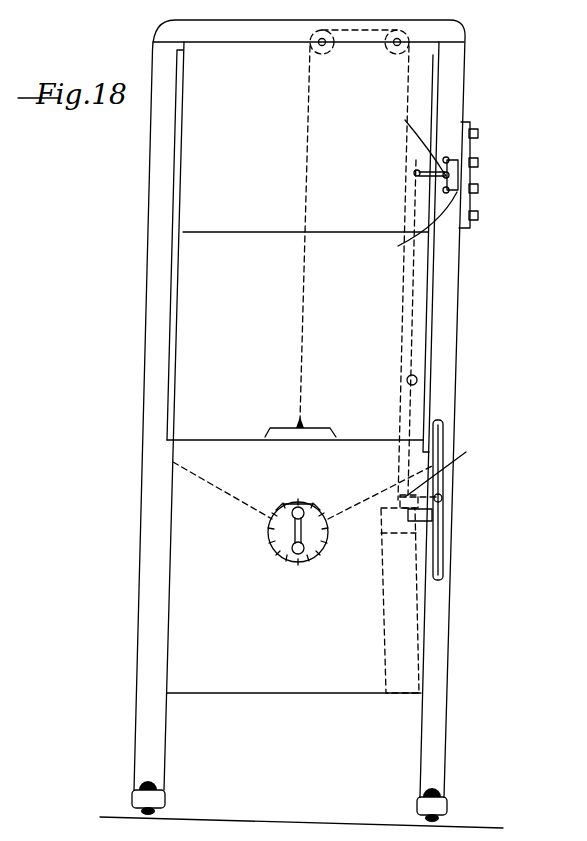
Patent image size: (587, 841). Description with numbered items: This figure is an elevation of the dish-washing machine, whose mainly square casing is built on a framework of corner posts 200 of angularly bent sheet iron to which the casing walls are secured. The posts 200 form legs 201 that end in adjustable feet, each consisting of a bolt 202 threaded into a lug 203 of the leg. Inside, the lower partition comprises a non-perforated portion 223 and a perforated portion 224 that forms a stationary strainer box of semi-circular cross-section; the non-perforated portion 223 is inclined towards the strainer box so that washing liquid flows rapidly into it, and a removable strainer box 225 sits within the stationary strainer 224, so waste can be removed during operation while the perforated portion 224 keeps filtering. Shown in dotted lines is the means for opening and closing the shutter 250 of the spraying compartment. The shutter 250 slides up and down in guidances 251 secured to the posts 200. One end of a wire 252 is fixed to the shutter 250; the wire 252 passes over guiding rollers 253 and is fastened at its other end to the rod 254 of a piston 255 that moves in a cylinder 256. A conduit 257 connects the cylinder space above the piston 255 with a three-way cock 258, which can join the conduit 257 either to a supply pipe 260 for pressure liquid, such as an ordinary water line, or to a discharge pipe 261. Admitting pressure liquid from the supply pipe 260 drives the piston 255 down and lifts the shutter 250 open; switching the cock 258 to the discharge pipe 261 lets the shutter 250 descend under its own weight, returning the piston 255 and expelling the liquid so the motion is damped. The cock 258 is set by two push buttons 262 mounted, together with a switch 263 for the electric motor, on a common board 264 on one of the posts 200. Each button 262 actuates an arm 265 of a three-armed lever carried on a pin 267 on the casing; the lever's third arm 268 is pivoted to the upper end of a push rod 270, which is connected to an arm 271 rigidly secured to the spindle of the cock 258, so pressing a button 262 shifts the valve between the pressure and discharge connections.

The corner posts 200 is at (450, 315).
The legs 201 is at (441, 740).
The bolts 202 is at (438, 791).
The lugs 203 is at (446, 808).
The non-perforated portion 223 is at (214, 488).
The perforated portion 224 is at (285, 556).
The removable strainer box 225 is at (306, 556).
The shutter 250 is at (180, 280).
The guidances 251 is at (178, 148).
The wire 252 is at (302, 318).
The guiding rollers 253 is at (390, 51).
The rod 254 is at (402, 408).
The piston 255 is at (393, 520).
The cylinder 256 is at (383, 577).
The conduit 257 is at (433, 515).
The three-way cock 258 is at (443, 495).
The supply pipe 260 is at (443, 436).
The discharge pipe 261 is at (443, 550).
The push buttons 262 is at (476, 189).
The switch 263 is at (480, 133).
The common board 264 is at (467, 122).
The arm 265 is at (414, 226).
The pin 267 is at (414, 144).
The third arm 268 is at (443, 176).
The push rod 270 is at (419, 288).
The arm 271 is at (446, 470).